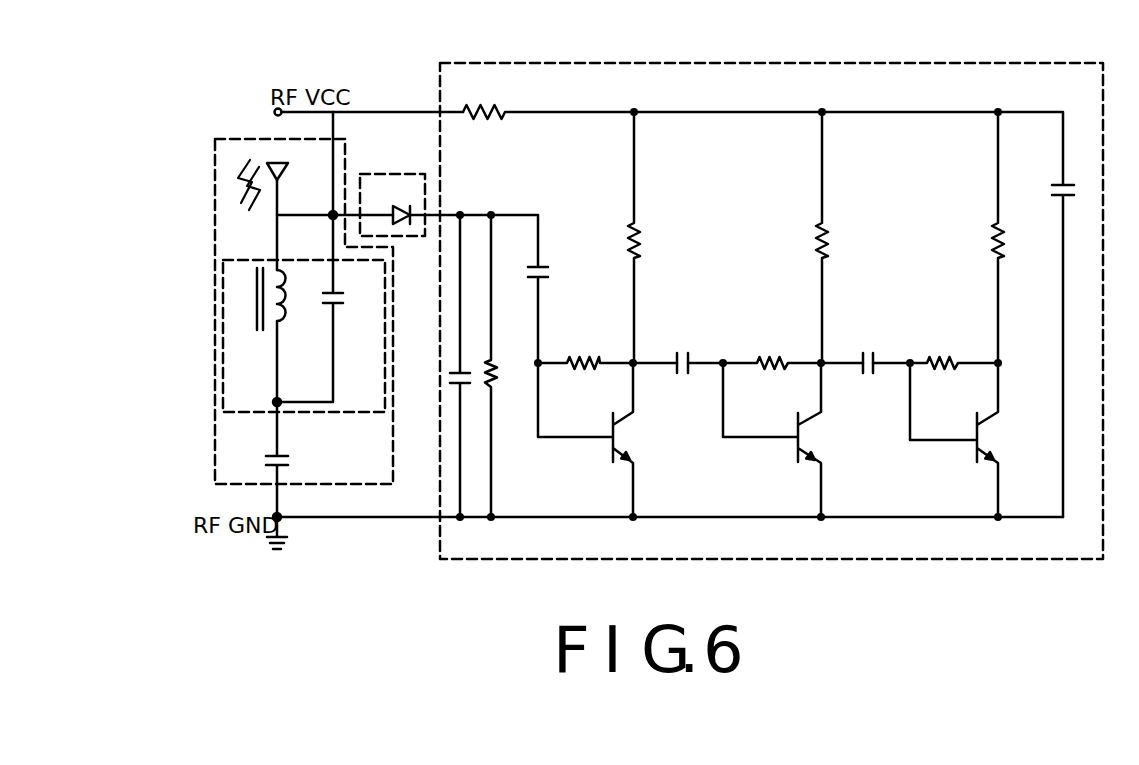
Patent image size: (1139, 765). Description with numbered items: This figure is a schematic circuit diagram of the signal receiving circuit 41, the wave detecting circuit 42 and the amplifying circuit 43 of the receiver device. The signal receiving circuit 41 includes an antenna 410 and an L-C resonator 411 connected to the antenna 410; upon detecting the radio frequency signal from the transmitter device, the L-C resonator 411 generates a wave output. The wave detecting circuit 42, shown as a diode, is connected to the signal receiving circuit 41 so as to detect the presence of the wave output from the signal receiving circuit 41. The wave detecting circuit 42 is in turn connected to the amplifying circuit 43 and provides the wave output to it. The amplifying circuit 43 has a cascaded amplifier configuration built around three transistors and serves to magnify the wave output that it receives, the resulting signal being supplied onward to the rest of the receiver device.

The signal receiving circuit 41 is at (348, 484).
The antenna 410 is at (250, 160).
The L-C resonator 411 is at (348, 396).
The wave detecting circuit 42 is at (371, 174).
The amplifying circuit 43 is at (797, 90).